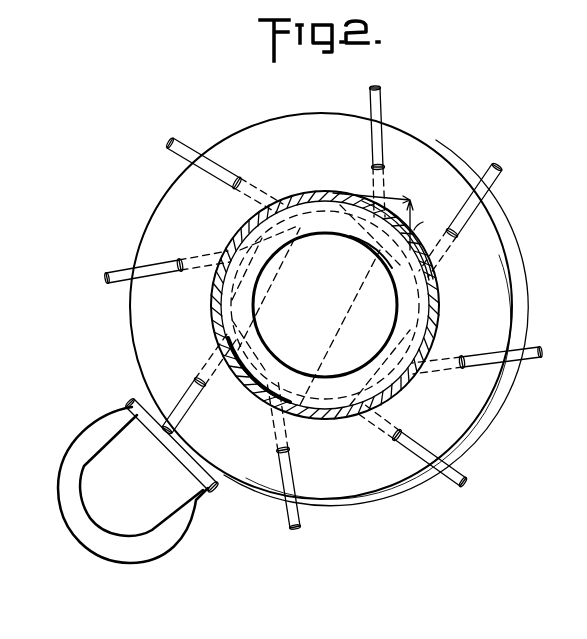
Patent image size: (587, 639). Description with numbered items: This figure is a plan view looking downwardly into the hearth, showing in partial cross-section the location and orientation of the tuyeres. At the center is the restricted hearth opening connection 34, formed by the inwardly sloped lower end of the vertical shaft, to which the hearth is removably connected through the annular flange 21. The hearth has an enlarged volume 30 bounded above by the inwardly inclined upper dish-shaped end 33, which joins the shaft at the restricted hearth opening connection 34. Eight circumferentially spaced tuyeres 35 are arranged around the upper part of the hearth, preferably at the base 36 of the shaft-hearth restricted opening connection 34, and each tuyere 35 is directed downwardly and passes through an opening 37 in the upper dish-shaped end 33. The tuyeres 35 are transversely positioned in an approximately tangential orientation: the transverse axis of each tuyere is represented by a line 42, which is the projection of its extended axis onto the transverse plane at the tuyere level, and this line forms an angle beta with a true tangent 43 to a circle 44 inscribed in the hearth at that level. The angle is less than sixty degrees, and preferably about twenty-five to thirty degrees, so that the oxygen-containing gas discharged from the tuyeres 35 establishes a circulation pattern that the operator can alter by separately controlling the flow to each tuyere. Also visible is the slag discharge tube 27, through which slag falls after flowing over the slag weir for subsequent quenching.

The annular flange 21 is at (432, 312).
The slag discharge tube 27 is at (90, 428).
The enlarged volume 30 is at (333, 341).
The upper dish-shaped end 33 is at (490, 248).
The restricted hearth opening connection 34 is at (318, 402).
The tuyeres 35 is at (493, 168).
The base of the shaft-hearth restricted opening connection 36 is at (254, 295).
The opening 37 is at (242, 174).
The line 42 is at (356, 238).
The true tangent 43 is at (393, 200).
The circle 44 is at (430, 340).